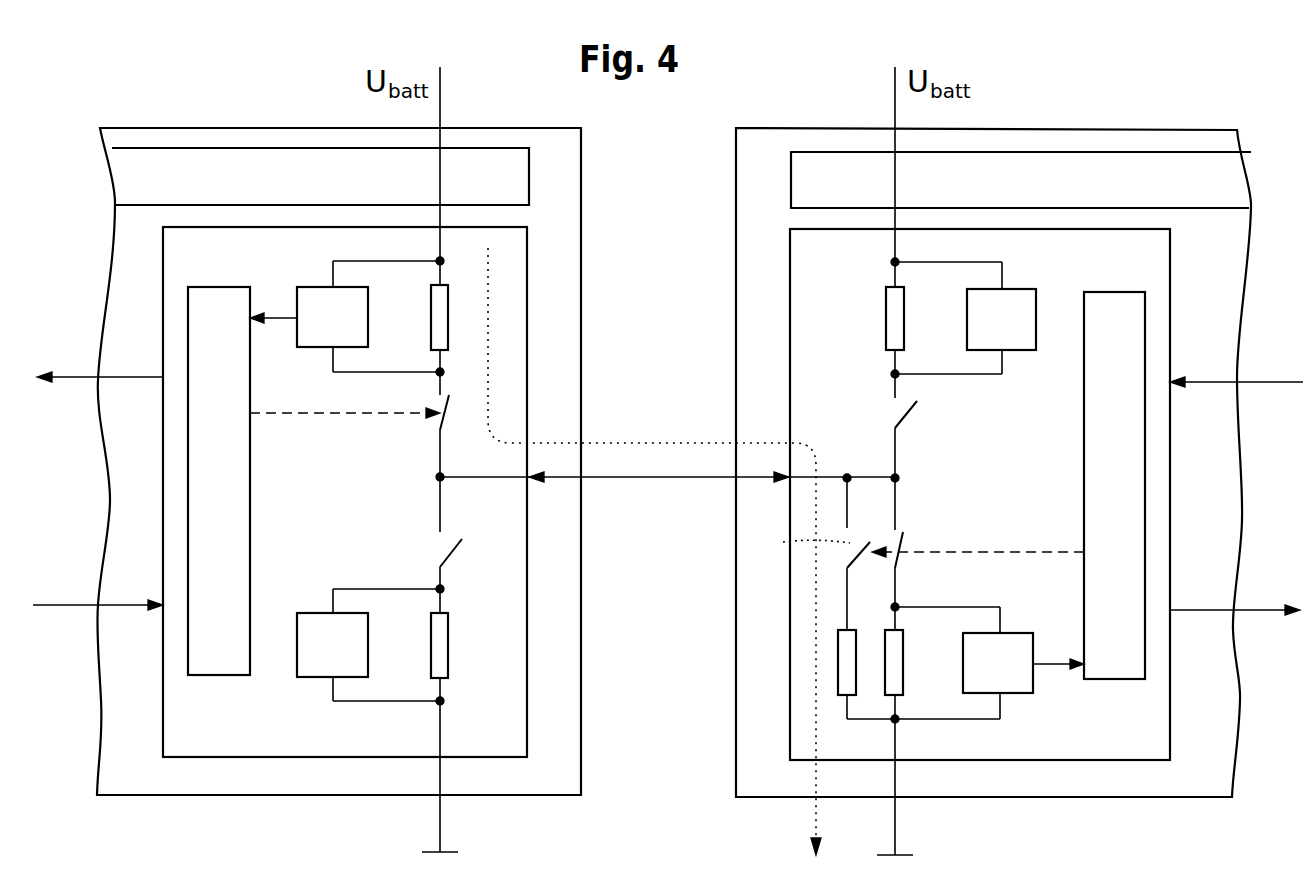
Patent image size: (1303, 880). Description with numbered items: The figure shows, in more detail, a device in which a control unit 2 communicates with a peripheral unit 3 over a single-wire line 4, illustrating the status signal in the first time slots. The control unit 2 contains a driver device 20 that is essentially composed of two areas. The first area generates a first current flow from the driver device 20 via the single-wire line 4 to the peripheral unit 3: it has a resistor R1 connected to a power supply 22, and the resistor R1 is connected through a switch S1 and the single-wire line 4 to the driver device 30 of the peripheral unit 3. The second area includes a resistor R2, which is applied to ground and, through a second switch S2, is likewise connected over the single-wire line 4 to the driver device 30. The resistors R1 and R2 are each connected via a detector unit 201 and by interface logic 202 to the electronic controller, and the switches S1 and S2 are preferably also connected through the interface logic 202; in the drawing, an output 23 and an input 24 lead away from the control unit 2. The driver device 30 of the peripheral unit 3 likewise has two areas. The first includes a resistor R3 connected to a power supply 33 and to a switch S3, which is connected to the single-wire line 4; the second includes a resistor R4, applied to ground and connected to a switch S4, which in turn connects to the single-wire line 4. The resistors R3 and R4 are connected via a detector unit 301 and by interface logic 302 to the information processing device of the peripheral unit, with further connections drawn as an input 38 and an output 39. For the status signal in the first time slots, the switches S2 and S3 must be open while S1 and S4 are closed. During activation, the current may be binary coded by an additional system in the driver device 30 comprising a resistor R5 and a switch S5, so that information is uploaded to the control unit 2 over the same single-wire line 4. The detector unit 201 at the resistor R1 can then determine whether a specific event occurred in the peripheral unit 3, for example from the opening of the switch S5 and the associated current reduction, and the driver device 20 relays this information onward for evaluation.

The control unit 2 is at (152, 128).
The peripheral unit 3 is at (826, 128).
The single-wire line 4 is at (658, 480).
The driver device 20 is at (237, 270).
The power supply 22 is at (237, 195).
The output of first control unit 23 is at (75, 377).
The input of first control unit 24 is at (52, 605).
The detector unit 201 is at (355, 333).
The interface logic 202 is at (242, 333).
The driver device 30 is at (852, 270).
The power supply 33 is at (852, 195).
The input of second control unit 38 is at (1285, 382).
The output of second control unit 39 is at (1258, 610).
The detector unit 301 is at (1021, 337).
The interface logic 302 is at (1137, 335).
The resistor R1 is at (431, 315).
The resistor R2 is at (431, 641).
The resistor R3 is at (904, 316).
The resistor R4 is at (903, 660).
The resistor R5 is at (838, 660).
The switch S1 is at (437, 425).
The second switch S2 is at (448, 551).
The switch S3 is at (906, 416).
The switch S4 is at (900, 560).
The switch S5 is at (852, 556).